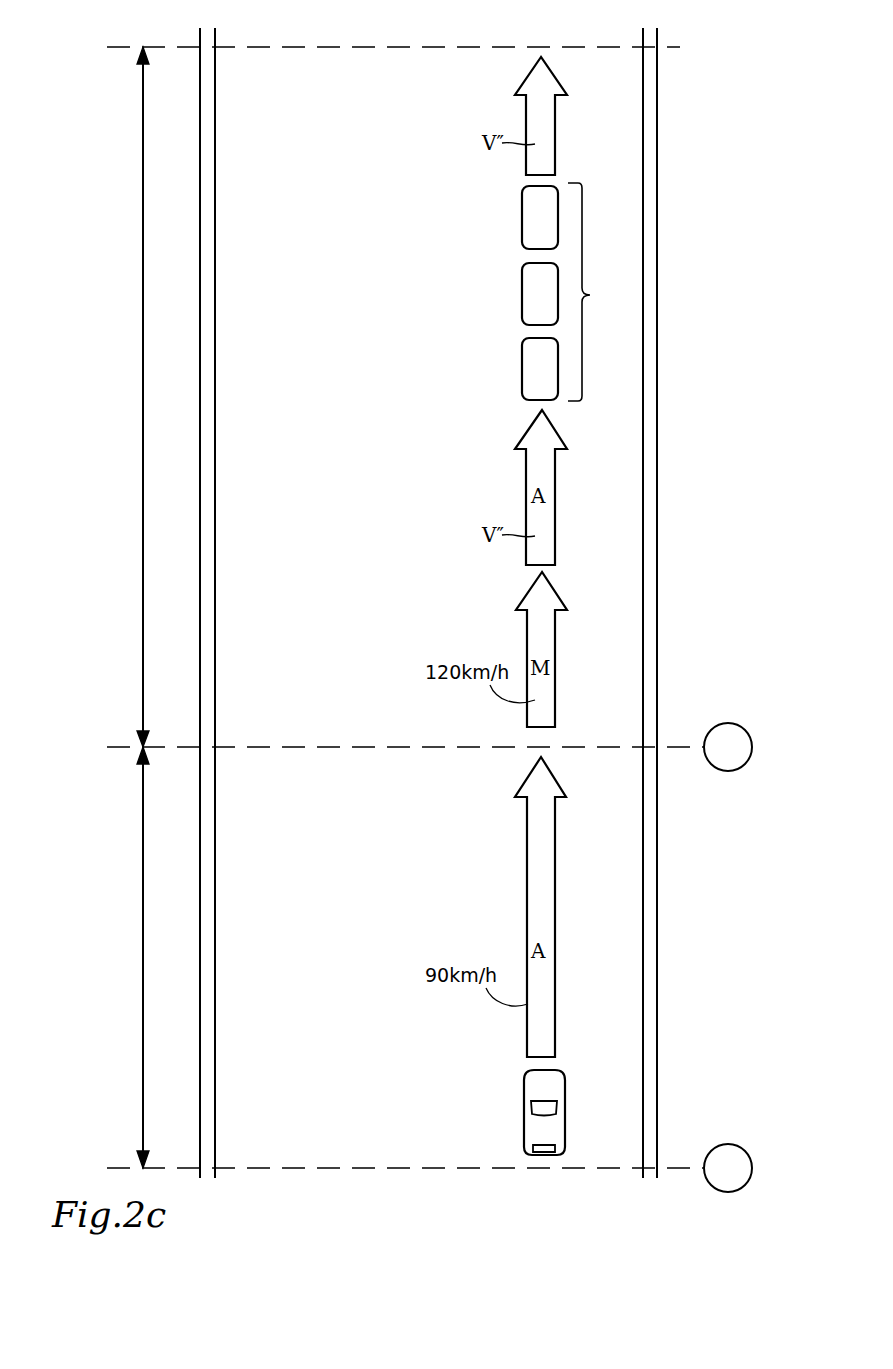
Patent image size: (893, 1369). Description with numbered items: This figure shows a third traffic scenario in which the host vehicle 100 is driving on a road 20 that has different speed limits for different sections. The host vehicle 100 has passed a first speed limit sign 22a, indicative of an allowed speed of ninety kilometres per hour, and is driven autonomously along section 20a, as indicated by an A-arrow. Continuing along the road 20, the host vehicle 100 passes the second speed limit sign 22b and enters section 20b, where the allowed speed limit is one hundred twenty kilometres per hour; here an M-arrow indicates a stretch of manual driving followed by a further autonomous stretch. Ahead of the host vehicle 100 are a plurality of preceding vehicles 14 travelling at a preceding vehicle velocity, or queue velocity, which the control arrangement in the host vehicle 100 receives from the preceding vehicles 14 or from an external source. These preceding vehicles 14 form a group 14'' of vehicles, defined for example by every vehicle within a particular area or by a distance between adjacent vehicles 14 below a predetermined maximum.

The preceding vehicle 14 is at (512, 293).
The group of vehicles 14'' is at (545, 292).
The road 20 is at (232, 614).
The first road section 20a is at (122, 957).
The second road section 20b is at (122, 397).
The first speed limit sign 22a is at (720, 1144).
The second speed limit sign 22b is at (720, 724).
The host vehicle 100 is at (533, 1122).